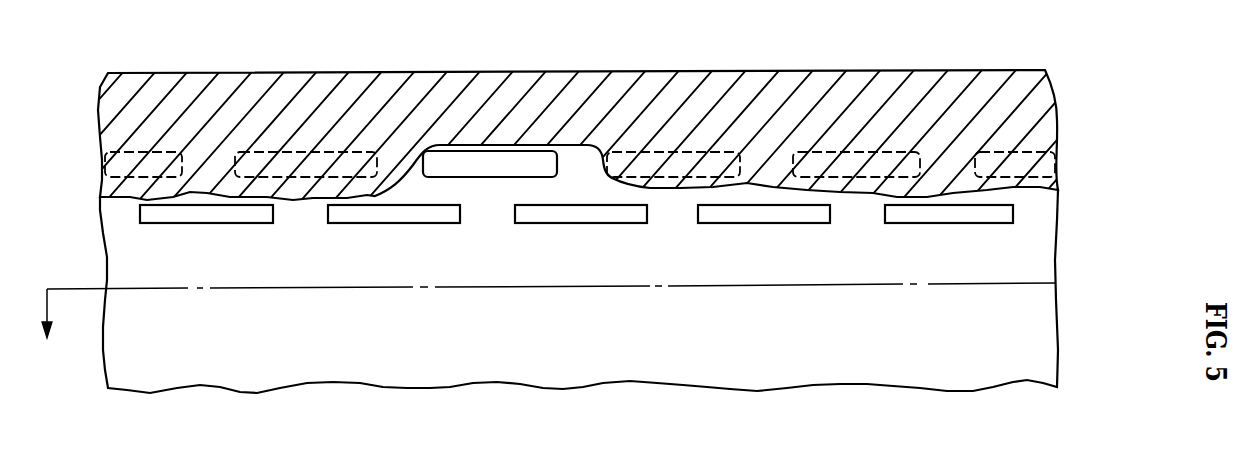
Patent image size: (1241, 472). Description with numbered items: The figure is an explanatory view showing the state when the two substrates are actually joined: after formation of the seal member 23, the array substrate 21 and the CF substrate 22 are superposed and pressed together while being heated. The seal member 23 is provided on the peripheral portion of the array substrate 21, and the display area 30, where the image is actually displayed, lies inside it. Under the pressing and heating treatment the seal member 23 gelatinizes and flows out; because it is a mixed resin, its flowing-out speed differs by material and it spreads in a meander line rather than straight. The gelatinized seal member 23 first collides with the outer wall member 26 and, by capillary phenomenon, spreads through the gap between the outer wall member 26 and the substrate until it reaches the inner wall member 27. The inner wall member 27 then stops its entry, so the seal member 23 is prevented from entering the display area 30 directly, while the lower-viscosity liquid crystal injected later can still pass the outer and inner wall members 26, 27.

The array substrate 21 is at (597, 291).
The CF substrate 22 is at (1057, 256).
The seal member 23 is at (1020, 130).
The outer wall member 26 is at (330, 150).
The inner wall member 27 is at (413, 223).
The display area 30 is at (49, 332).